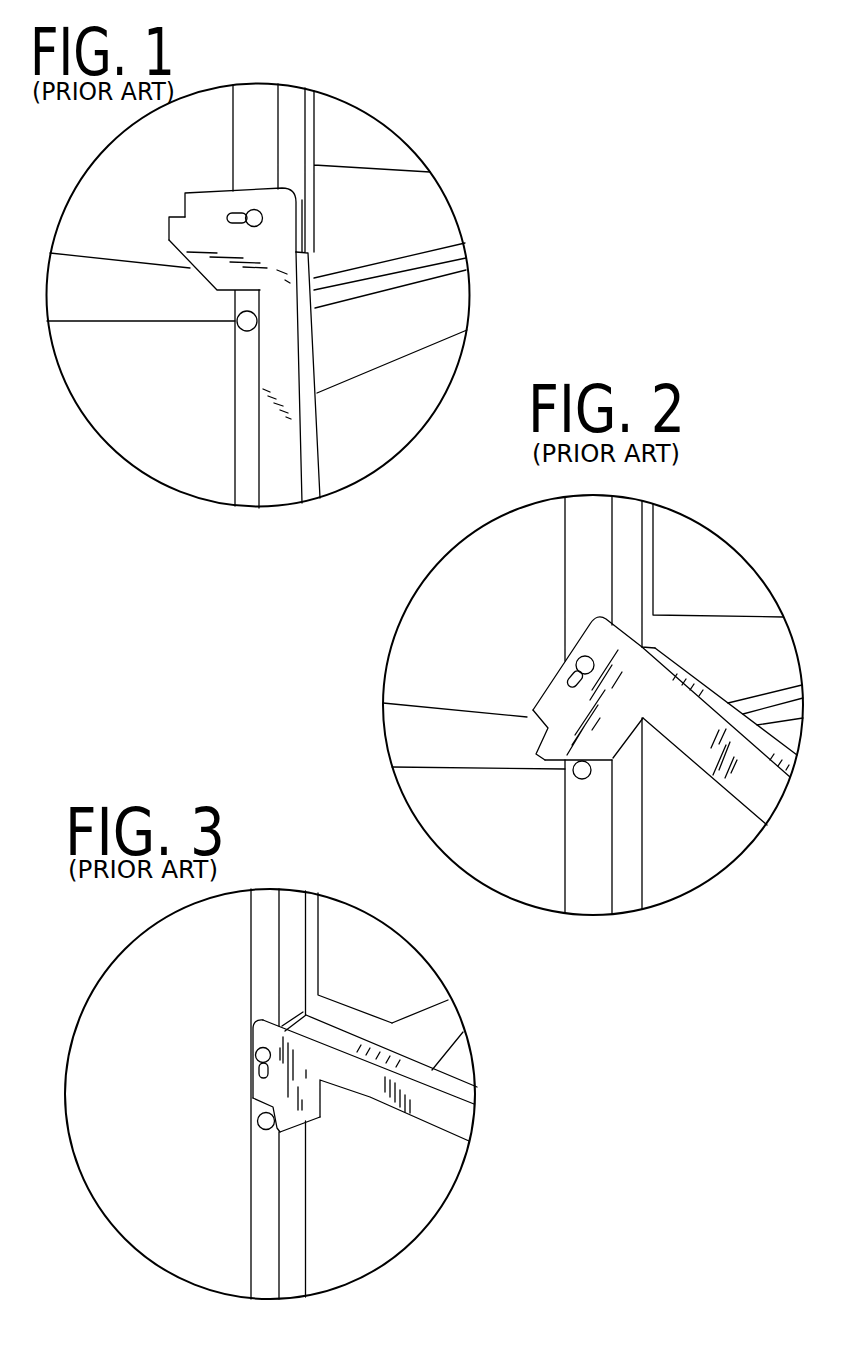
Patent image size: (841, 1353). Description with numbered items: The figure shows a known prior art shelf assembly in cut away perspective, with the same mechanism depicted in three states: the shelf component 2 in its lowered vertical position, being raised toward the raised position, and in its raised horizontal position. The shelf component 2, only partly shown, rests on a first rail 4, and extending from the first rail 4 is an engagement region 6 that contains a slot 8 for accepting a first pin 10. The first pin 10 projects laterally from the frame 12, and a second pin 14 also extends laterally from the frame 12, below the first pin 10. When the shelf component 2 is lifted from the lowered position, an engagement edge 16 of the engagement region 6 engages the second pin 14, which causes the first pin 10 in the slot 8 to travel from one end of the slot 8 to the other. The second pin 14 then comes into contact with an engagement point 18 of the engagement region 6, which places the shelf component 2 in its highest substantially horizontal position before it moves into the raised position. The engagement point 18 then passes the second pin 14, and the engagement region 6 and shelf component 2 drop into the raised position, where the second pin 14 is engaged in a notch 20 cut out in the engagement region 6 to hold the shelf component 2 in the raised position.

In FIG. 1, the shelf component 2 is at (390, 415).
In FIG. 2, the shelf component 2 is at (781, 731).
In FIG. 3, the shelf component 2 is at (455, 1057).
In FIG. 1, the first rail 4 is at (268, 437).
In FIG. 2, the first rail 4 is at (763, 795).
In FIG. 3, the first rail 4 is at (443, 1118).
In FIG. 1, the engagement region 6 is at (277, 245).
In FIG. 2, the engagement region 6 is at (627, 663).
In FIG. 3, the engagement region 6 is at (307, 1058).
In FIG. 1, the slot 8 is at (233, 213).
In FIG. 2, the slot 8 is at (573, 681).
In FIG. 3, the slot 8 is at (258, 1072).
In FIG. 1, the first pin 10 is at (263, 214).
In FIG. 2, the first pin 10 is at (590, 660).
In FIG. 3, the first pin 10 is at (266, 1053).
In FIG. 1, the frame 12 is at (259, 103).
In FIG. 2, the frame 12 is at (577, 870).
In FIG. 3, the frame 12 is at (297, 1210).
In FIG. 1, the second pin 14 is at (247, 331).
In FIG. 2, the second pin 14 is at (582, 780).
In FIG. 3, the second pin 14 is at (262, 1128).
In FIG. 1, the engagement edge 16 is at (187, 270).
In FIG. 2, the engagement edge 16 is at (602, 761).
In FIG. 3, the engagement edge 16 is at (300, 1127).
In FIG. 1, the engagement point 18 is at (168, 223).
In FIG. 2, the engagement point 18 is at (546, 762).
In FIG. 3, the engagement point 18 is at (280, 1133).
In FIG. 1, the notch 20 is at (165, 197).
In FIG. 2, the notch 20 is at (531, 735).
In FIG. 3, the notch 20 is at (229, 1115).